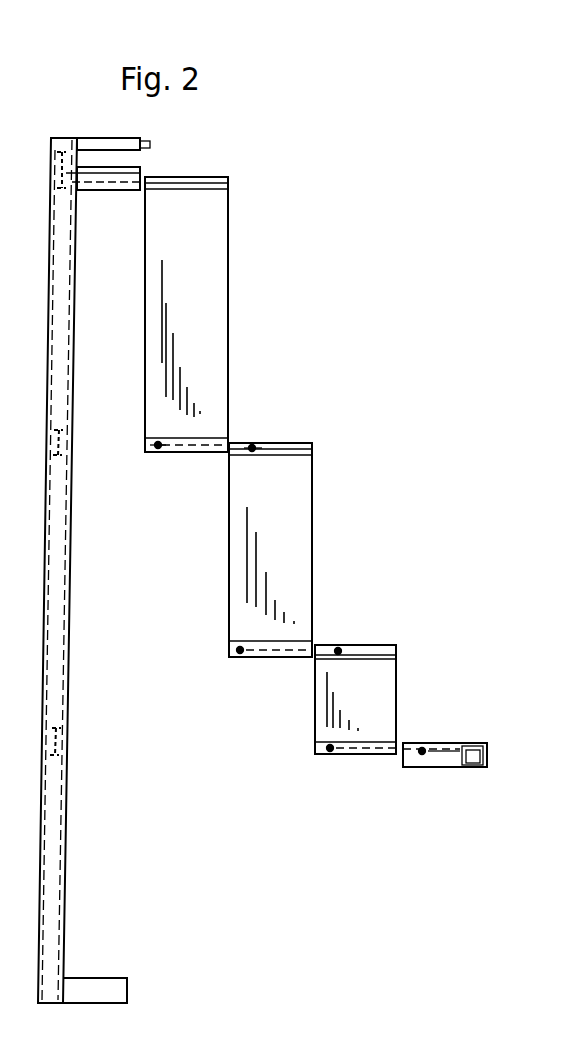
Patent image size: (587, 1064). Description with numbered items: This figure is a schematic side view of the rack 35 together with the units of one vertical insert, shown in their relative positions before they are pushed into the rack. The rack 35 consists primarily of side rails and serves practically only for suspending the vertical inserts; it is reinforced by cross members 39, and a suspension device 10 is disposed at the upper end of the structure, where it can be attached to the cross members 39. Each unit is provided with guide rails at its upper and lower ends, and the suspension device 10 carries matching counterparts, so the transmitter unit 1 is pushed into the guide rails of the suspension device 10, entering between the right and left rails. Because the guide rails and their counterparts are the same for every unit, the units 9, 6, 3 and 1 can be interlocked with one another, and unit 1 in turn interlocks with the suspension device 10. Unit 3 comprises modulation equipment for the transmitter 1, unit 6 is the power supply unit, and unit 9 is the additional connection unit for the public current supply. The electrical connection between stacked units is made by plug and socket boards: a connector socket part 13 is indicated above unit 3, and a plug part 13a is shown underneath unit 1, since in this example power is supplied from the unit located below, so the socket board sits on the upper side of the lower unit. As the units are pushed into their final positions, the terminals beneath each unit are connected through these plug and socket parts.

The transmitter unit 1 is at (166, 327).
The modulation unit 3 is at (240, 570).
The power supply unit 6 is at (327, 721).
The public power supply connection unit 9 is at (430, 757).
The suspension device 10 is at (130, 167).
The connector socket part 13 is at (255, 446).
The plug part 13a is at (157, 453).
The rack 35 is at (53, 684).
The cross members 39 is at (60, 742).